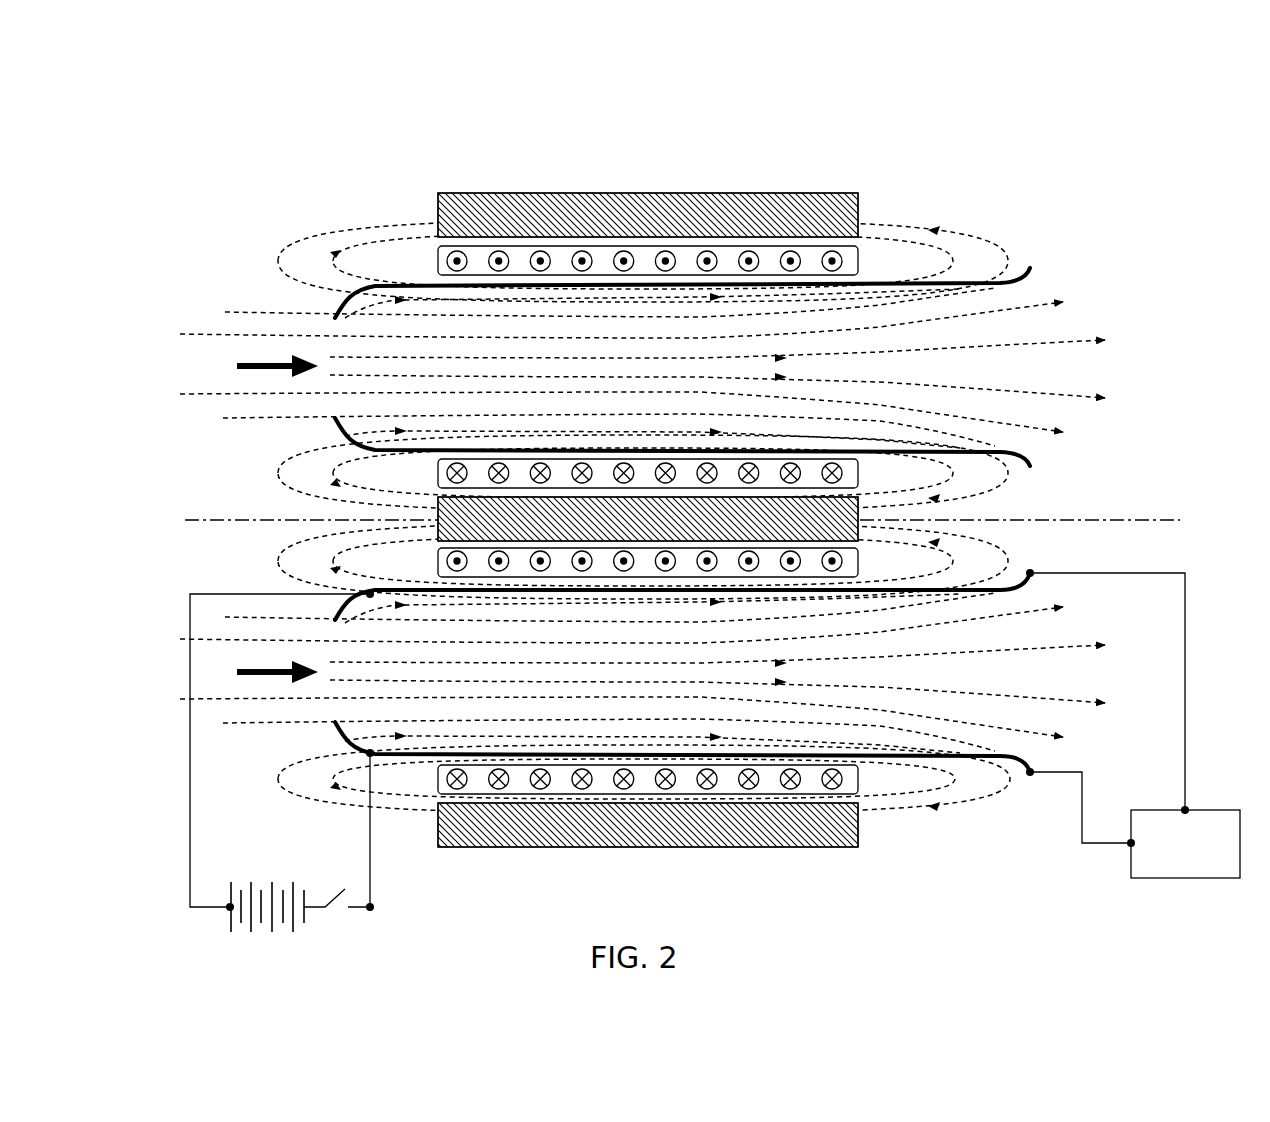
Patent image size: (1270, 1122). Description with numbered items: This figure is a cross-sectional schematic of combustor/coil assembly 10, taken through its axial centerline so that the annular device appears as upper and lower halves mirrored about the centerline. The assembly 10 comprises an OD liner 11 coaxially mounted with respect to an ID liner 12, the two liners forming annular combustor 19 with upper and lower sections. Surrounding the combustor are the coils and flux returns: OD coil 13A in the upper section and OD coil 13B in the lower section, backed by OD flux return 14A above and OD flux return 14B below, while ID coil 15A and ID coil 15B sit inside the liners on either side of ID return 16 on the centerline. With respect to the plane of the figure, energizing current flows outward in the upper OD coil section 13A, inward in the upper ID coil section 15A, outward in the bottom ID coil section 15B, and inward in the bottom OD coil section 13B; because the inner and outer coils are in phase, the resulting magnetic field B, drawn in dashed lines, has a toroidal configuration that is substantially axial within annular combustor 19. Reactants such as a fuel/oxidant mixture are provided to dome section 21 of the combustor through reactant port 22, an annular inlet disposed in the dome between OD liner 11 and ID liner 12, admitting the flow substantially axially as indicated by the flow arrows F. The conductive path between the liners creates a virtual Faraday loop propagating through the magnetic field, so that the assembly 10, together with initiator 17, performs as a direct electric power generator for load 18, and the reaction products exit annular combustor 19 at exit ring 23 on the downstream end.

The combustor/coil assembly 10 is at (290, 125).
The OD liner 11 is at (345, 296).
The ID liner 12 is at (340, 423).
The upper OD coil section 13A is at (858, 262).
The lower OD coil section 13B is at (858, 780).
The upper OD flux return 14A is at (858, 210).
The lower OD flux return 14B is at (858, 832).
The upper ID coil section 15A is at (858, 474).
The lower ID coil section 15B is at (858, 562).
The ID return 16 is at (445, 500).
The initiator 17 is at (230, 914).
The load 18 is at (1131, 858).
The annular combustor 19 is at (559, 562).
The dome section 21 is at (343, 285).
The reactant port 22 is at (305, 334).
The exit ring 23 is at (1092, 273).